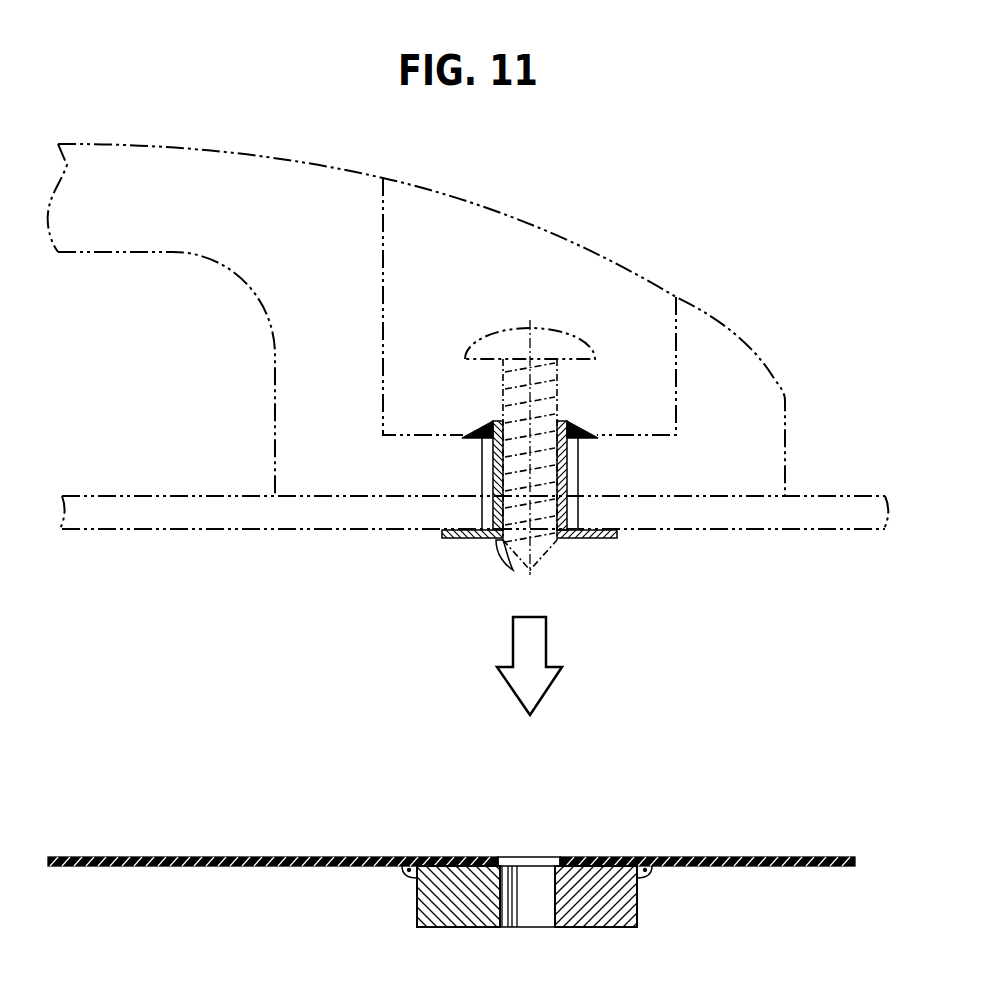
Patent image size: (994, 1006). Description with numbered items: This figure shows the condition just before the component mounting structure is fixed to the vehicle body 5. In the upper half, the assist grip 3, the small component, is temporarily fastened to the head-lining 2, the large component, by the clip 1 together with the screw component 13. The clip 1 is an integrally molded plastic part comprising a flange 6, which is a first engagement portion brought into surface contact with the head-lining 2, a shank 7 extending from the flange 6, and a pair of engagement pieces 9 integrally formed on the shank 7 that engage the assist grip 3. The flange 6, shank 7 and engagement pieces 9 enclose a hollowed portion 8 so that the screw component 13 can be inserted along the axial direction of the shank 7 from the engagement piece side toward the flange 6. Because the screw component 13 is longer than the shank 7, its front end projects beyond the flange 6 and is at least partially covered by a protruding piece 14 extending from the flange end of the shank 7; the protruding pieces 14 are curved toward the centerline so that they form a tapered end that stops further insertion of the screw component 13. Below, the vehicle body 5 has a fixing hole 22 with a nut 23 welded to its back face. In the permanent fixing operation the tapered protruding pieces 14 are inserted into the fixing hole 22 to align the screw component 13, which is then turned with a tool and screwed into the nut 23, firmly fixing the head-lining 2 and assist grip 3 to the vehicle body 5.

The clip 1 is at (595, 538).
The head-lining 2 is at (108, 522).
The assist grip 3 is at (133, 180).
The vehicle body 5 is at (218, 857).
The flange 6 is at (451, 537).
The shank 7 is at (493, 467).
The hollowed portion 8 is at (548, 549).
The engagement pieces 9 is at (480, 432).
The screw component 13 is at (505, 340).
The protruding piece 14 is at (500, 548).
The fixing hole 22 is at (546, 872).
The nut 23 is at (457, 922).